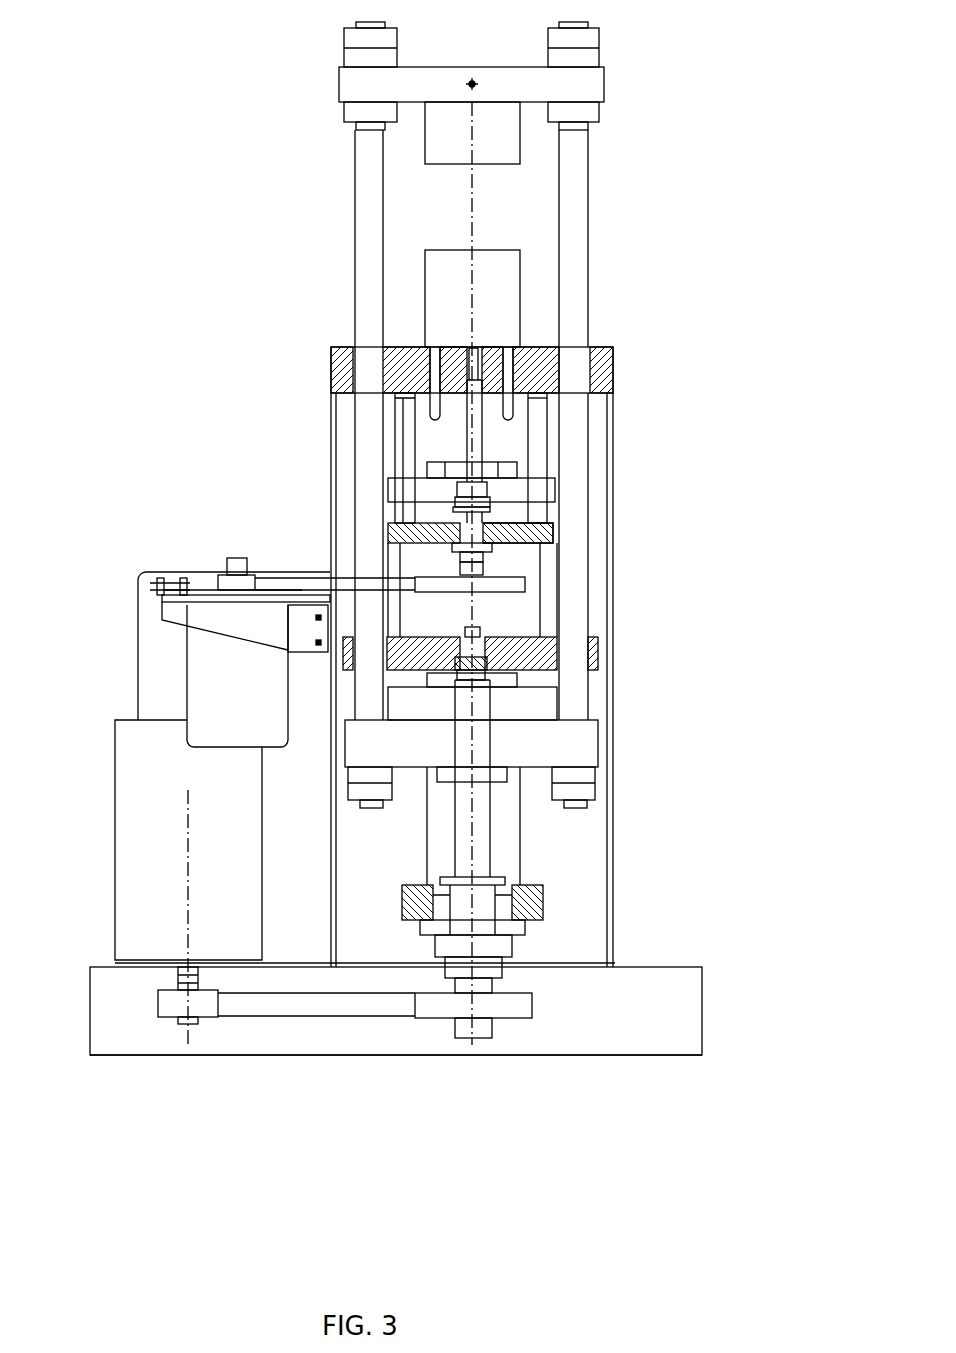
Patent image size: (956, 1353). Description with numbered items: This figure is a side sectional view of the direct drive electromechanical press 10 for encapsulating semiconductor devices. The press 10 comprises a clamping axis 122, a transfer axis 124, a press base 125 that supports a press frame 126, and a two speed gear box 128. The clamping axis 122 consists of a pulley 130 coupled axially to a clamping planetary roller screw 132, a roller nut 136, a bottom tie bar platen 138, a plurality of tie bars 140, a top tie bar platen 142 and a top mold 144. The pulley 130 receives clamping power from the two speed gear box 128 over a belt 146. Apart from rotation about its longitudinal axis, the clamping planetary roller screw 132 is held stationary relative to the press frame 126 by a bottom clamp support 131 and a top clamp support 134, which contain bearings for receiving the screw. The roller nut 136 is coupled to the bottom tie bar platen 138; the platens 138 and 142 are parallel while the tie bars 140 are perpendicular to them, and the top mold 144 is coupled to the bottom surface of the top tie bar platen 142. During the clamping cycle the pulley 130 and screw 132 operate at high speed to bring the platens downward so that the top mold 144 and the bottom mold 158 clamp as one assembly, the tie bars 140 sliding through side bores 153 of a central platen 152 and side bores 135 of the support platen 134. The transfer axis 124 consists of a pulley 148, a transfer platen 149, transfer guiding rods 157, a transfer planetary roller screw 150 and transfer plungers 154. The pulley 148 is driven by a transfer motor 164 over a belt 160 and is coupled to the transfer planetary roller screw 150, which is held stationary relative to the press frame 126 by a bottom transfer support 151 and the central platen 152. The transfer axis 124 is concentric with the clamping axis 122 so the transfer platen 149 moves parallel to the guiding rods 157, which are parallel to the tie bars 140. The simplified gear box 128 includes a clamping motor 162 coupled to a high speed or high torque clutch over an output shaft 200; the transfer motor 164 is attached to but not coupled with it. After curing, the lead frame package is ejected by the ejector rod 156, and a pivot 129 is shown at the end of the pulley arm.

The direct drive electromechanical press 10 is at (100, 176).
The clamping axis 122 is at (520, 800).
The transfer axis 124 is at (555, 472).
The press base 125 is at (703, 968).
The press frame 126 is at (612, 566).
The two speed gear box 128 is at (117, 803).
The pivot pin 129 is at (168, 1012).
The pulley 130 is at (525, 1008).
The bottom clamp support 131 is at (402, 897).
The clamping planetary roller screw 132 is at (490, 825).
The top clamp support 134 is at (595, 657).
The side bores 135 is at (592, 637).
The roller nut 136 is at (557, 693).
The bottom tie bar platen 138 is at (598, 742).
The tie bars 140 is at (355, 186).
The top tie bar platen 142 is at (605, 78).
The top mold 144 is at (455, 165).
The belt 146 is at (302, 1056).
The pulley 148 is at (388, 520).
The transfer platen 149 is at (535, 498).
The transfer planetary roller screw 150 is at (467, 438).
The bottom transfer support 151 is at (553, 528).
The central platen 152 is at (612, 348).
The side bores 153 is at (348, 390).
The transfer plungers 154 is at (510, 347).
The ejector rod 156 is at (430, 350).
The transfer guiding rods 157 is at (395, 415).
The bottom mold 158 is at (455, 250).
The belt 160 is at (430, 575).
The clamping motor 162 is at (138, 598).
The transfer motor 164 is at (187, 668).
The output shaft 200 is at (183, 980).